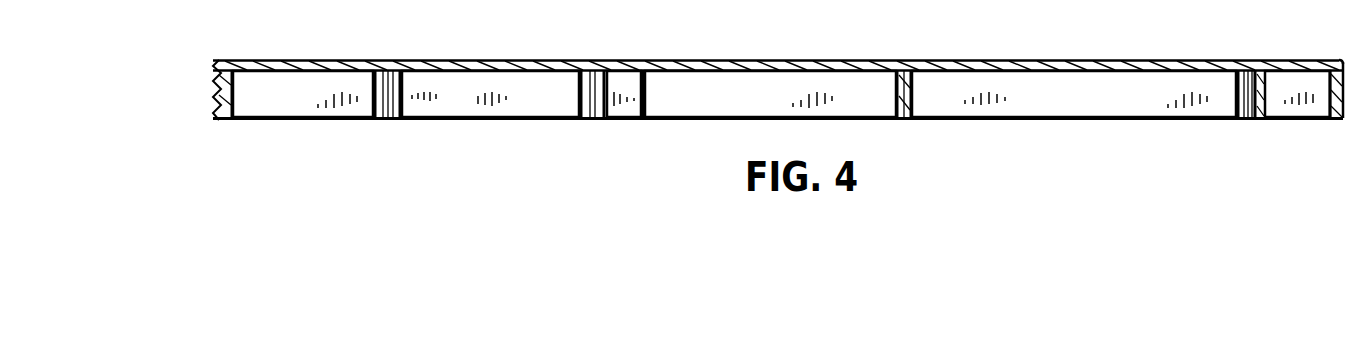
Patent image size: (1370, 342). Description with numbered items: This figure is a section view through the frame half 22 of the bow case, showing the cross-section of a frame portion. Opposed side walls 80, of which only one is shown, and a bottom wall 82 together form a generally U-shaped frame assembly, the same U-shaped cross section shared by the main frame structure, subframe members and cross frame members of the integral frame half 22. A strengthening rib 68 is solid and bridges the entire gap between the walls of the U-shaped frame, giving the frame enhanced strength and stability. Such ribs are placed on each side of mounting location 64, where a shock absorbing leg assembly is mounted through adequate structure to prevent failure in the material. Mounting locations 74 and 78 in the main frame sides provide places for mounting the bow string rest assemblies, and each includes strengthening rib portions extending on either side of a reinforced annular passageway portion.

The frame half 22 is at (542, 160).
The mounting location 64 is at (1250, 110).
The strengthening rib 68 is at (922, 96).
The mounting location 74 is at (386, 119).
The mounting location 78 is at (594, 118).
The side wall 80 is at (270, 106).
The bottom wall 82 is at (1081, 60).